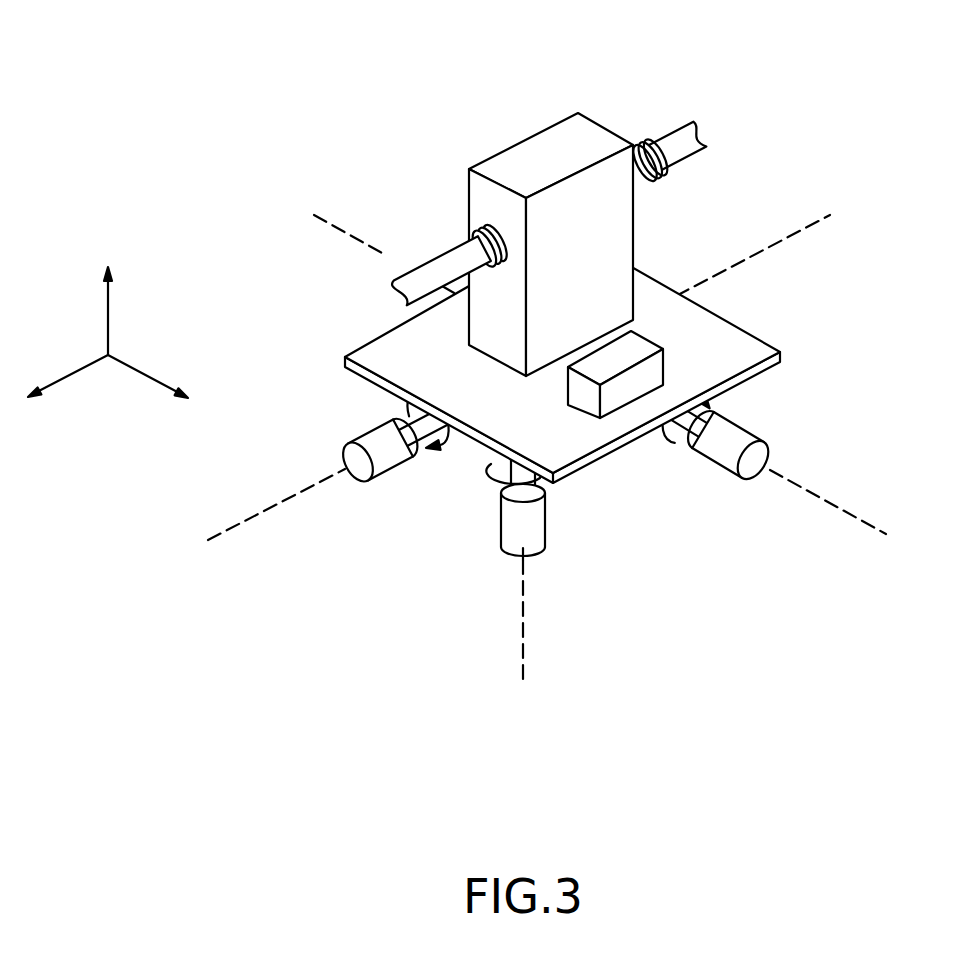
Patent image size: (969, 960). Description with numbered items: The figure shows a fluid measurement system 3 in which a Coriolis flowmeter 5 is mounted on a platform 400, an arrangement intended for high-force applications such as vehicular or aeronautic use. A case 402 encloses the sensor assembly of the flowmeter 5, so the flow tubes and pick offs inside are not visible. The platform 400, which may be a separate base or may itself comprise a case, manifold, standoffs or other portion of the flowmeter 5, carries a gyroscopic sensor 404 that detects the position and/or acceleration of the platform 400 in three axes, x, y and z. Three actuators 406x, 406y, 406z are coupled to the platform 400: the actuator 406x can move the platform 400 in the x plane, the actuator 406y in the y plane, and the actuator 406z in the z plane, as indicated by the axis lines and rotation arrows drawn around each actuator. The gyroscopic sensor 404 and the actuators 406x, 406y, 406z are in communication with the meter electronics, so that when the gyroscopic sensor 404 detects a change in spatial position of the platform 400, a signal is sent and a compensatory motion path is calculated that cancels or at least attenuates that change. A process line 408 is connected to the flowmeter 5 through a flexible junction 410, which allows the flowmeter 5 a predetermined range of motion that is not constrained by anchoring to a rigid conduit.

The fluid measurement system 3 is at (247, 68).
The flowmeter 5 is at (603, 211).
The platform 400 is at (382, 352).
The case 402 is at (625, 235).
The gyroscopic sensor 404 is at (653, 367).
The actuator 406x is at (378, 438).
The actuator 406y is at (720, 448).
The actuator 406z is at (517, 523).
The process line 408 is at (458, 252).
The flexible junction 410 is at (637, 143).